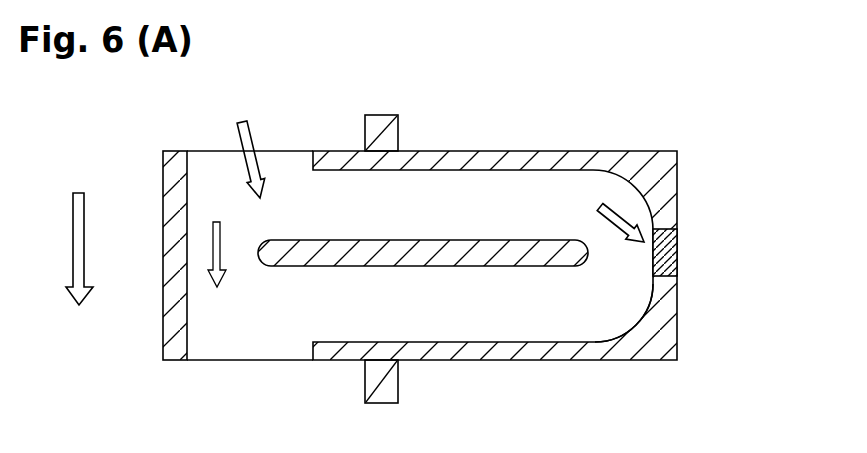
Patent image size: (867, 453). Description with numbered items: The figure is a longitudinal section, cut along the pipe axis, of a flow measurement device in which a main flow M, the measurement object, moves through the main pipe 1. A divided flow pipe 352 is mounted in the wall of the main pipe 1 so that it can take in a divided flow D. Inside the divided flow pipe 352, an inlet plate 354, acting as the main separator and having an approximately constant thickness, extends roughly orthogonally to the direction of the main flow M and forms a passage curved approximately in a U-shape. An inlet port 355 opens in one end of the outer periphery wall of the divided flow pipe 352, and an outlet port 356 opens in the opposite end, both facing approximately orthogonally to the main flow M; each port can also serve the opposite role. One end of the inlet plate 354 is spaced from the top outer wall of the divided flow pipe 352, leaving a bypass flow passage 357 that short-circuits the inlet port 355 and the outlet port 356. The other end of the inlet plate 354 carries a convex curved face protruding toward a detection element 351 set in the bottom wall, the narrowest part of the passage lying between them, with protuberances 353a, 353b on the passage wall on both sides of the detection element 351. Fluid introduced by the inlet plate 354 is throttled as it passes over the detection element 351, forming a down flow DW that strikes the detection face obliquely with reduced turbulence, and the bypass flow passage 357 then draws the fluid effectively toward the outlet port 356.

The main pipe 1 is at (399, 385).
The detection element 351 is at (677, 258).
The divided flow pipe 352 is at (430, 135).
The protuberance 353a is at (655, 200).
The protuberance 353b is at (655, 305).
The inlet plate 354 is at (417, 240).
The inlet port 355 is at (212, 151).
The outlet port 356 is at (247, 361).
The bypass flow passage 357 is at (233, 255).
The main flow M is at (86, 240).
The divided flow D is at (250, 134).
The down flow DW is at (600, 208).